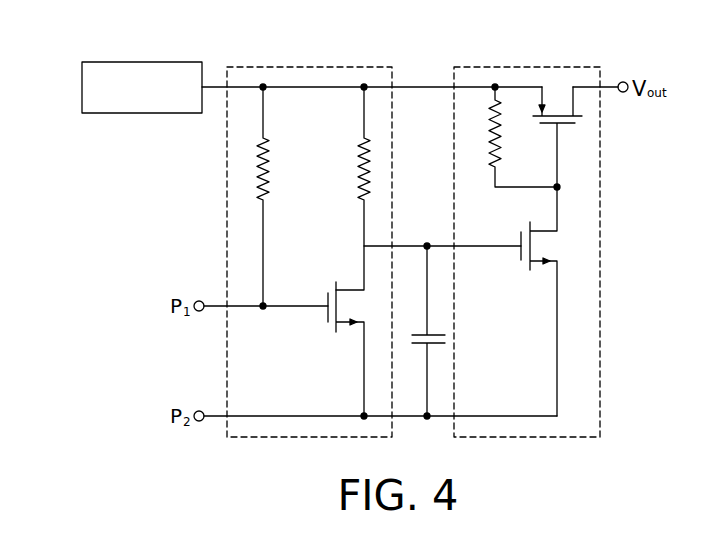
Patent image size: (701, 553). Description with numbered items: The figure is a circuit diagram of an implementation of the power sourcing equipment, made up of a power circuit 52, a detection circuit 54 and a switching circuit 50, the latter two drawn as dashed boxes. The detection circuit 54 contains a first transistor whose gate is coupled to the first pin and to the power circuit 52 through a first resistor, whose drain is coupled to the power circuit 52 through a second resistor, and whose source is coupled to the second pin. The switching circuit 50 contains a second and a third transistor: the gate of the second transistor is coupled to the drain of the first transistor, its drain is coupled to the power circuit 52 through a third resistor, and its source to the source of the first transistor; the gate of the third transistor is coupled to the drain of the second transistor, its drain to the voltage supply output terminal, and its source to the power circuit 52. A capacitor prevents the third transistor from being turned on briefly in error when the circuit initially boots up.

The power circuit 52 is at (141, 61).
The detection circuit 54 is at (311, 66).
The switching circuit 50 is at (548, 66).